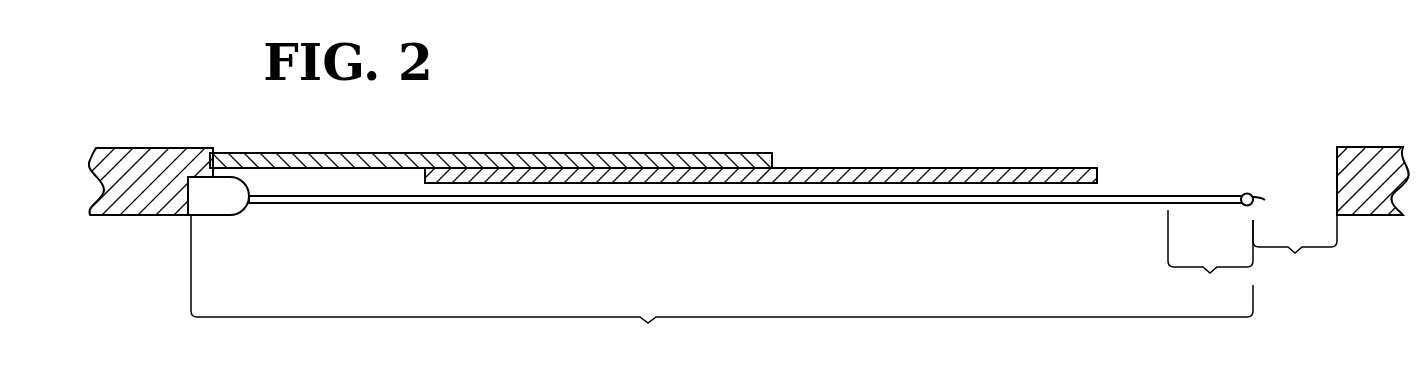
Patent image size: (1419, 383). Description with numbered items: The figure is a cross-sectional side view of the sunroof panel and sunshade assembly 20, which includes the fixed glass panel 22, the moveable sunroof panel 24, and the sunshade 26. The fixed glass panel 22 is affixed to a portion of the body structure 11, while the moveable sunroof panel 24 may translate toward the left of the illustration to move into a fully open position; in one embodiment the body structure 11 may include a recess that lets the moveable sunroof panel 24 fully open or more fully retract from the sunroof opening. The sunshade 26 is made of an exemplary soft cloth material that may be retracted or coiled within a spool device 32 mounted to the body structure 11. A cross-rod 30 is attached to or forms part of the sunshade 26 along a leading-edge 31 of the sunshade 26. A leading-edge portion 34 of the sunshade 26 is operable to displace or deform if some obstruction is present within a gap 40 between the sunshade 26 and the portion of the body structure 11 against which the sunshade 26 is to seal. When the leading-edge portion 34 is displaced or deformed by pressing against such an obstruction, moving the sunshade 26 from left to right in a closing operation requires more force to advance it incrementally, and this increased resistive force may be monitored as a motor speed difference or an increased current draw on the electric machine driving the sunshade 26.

The body structure 11 is at (165, 147).
The sunroof panel and sunshade assembly 20 is at (722, 282).
The fixed glass panel 22 is at (574, 163).
The moveable sunroof panel 24 is at (908, 178).
The sunshade 26 is at (1158, 195).
The cross-rod 30 is at (1247, 192).
The leading-edge 31 is at (1253, 197).
The spool device 32 is at (213, 200).
The leading-edge portion 34 is at (1210, 256).
The gap 40 is at (1295, 248).